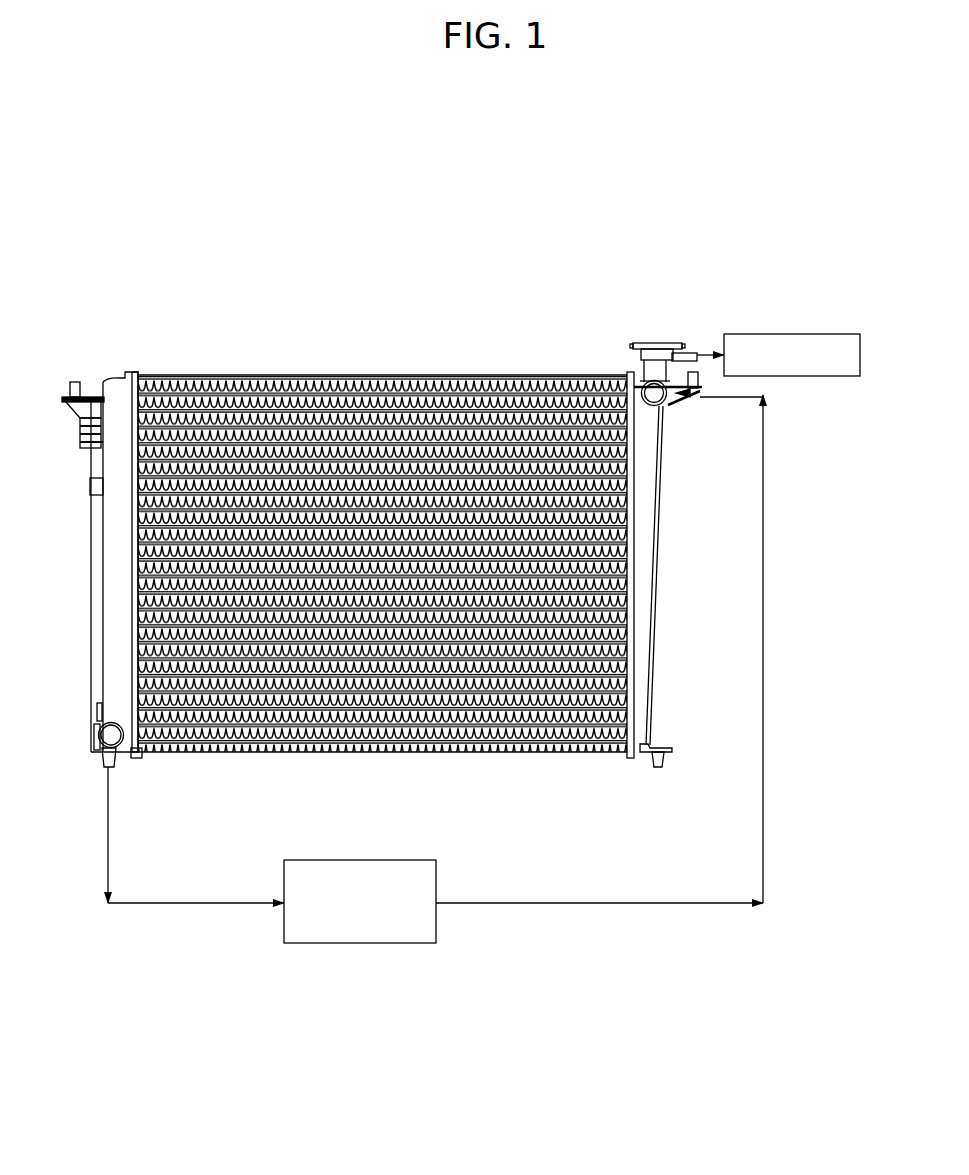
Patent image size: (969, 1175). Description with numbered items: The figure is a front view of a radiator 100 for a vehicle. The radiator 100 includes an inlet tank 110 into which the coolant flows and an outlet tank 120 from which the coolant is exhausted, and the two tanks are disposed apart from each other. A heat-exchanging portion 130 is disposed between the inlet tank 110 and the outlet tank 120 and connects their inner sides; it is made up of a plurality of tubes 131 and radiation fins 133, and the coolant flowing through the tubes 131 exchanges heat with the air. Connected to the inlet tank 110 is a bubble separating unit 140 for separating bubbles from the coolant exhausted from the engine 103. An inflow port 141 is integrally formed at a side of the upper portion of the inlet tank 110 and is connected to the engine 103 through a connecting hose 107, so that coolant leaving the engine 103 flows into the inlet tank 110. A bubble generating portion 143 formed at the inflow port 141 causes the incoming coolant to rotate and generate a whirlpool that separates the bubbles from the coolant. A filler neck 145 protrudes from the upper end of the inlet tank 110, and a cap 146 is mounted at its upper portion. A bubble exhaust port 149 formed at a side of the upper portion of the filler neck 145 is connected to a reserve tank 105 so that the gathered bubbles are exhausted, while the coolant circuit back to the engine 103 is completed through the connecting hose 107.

The radiator 100 is at (425, 300).
The engine 103 is at (360, 945).
The reserve tank 105 is at (800, 334).
The connecting hose 107 is at (724, 350).
The inlet tank 110 is at (650, 550).
The outlet tank 120 is at (120, 530).
The heat-exchanging portion 130 is at (380, 300).
The tubes 131 is at (295, 384).
The radiation fins 133 is at (364, 384).
The bubble separating unit 140 is at (620, 332).
The inflow port 141 is at (660, 408).
The bubble generating portion 143 is at (668, 408).
The filler neck 145 is at (655, 380).
The cap 146 is at (657, 343).
The bubble exhaust port 149 is at (690, 354).